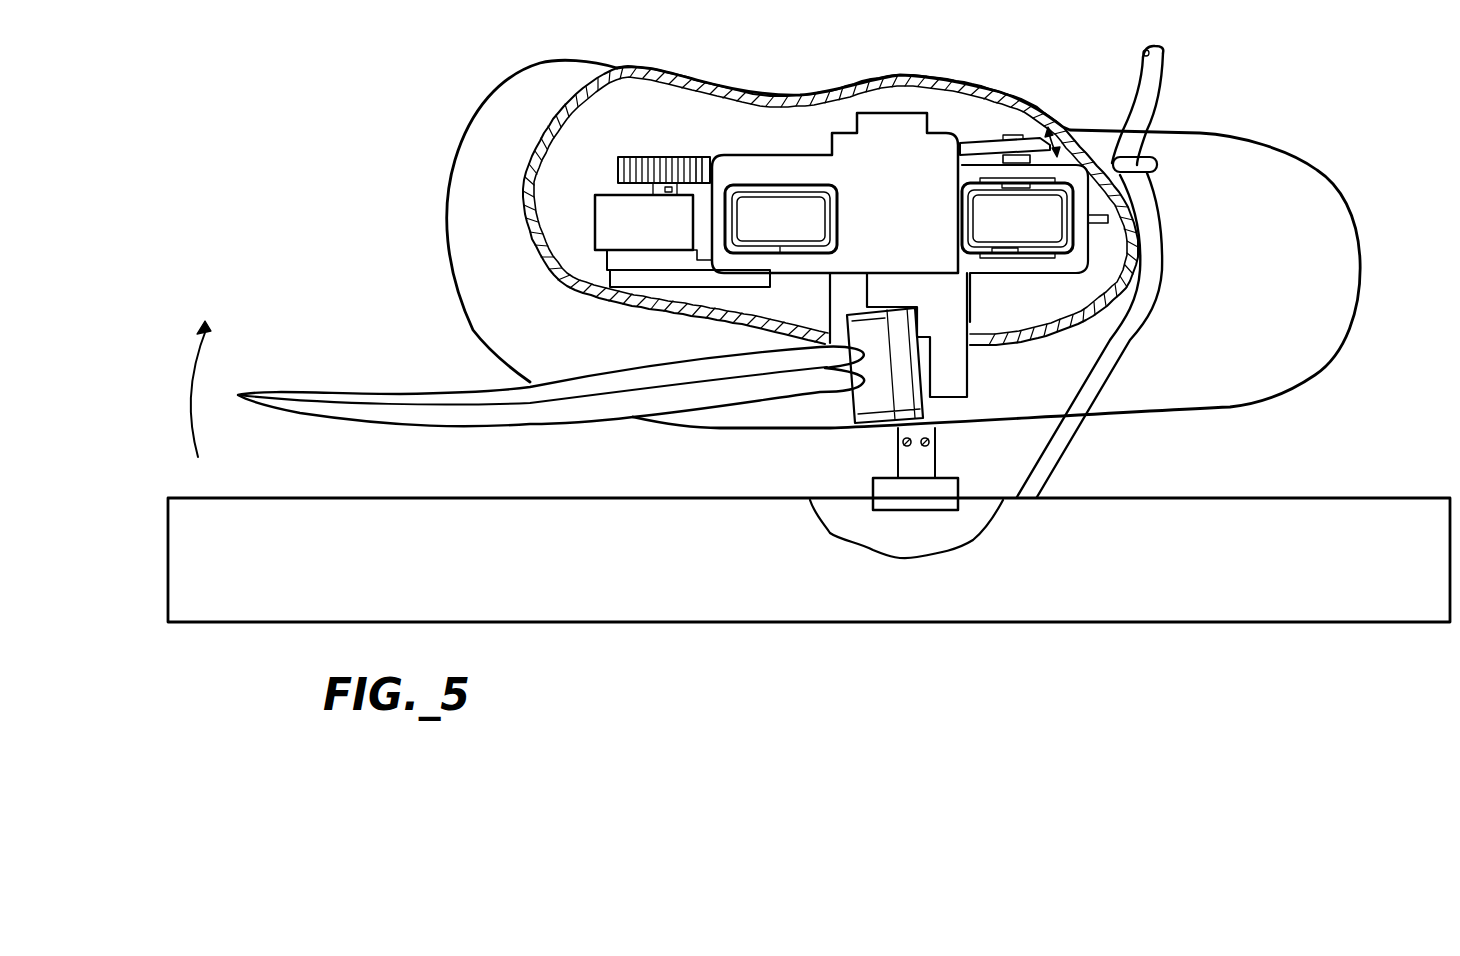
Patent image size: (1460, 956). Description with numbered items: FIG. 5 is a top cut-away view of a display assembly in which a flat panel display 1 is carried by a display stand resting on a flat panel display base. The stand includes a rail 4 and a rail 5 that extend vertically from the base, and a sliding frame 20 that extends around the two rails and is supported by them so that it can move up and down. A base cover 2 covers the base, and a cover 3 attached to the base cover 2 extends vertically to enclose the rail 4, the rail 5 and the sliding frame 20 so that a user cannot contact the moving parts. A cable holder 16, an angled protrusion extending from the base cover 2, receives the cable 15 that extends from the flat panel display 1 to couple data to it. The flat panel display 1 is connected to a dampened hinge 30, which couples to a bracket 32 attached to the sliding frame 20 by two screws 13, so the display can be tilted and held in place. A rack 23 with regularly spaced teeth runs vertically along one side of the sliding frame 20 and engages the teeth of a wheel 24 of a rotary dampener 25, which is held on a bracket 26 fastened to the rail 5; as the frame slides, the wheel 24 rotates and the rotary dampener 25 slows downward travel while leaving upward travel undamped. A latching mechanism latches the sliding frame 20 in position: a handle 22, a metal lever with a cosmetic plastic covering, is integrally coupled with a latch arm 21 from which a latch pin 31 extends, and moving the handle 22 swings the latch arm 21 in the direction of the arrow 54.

The flat panel display 1 is at (1247, 566).
The base cover 2 is at (1275, 128).
The cover 3 is at (1077, 133).
The rail 4 is at (993, 247).
The rail 5 is at (768, 187).
The screws 13 is at (921, 445).
The cable 15 is at (188, 387).
The cable holder 16 is at (1147, 157).
The sliding frame 20 is at (912, 225).
The latch arm 21 is at (985, 147).
The handle 22 is at (412, 423).
The rack 23 is at (702, 163).
The wheel 24 is at (655, 163).
The rotary dampener 25 is at (430, 183).
The bracket 26 is at (613, 277).
The hinge 30 is at (946, 496).
The latch pin 31 is at (1020, 157).
The bracket 32 is at (927, 463).
The arrow 54 is at (1063, 113).